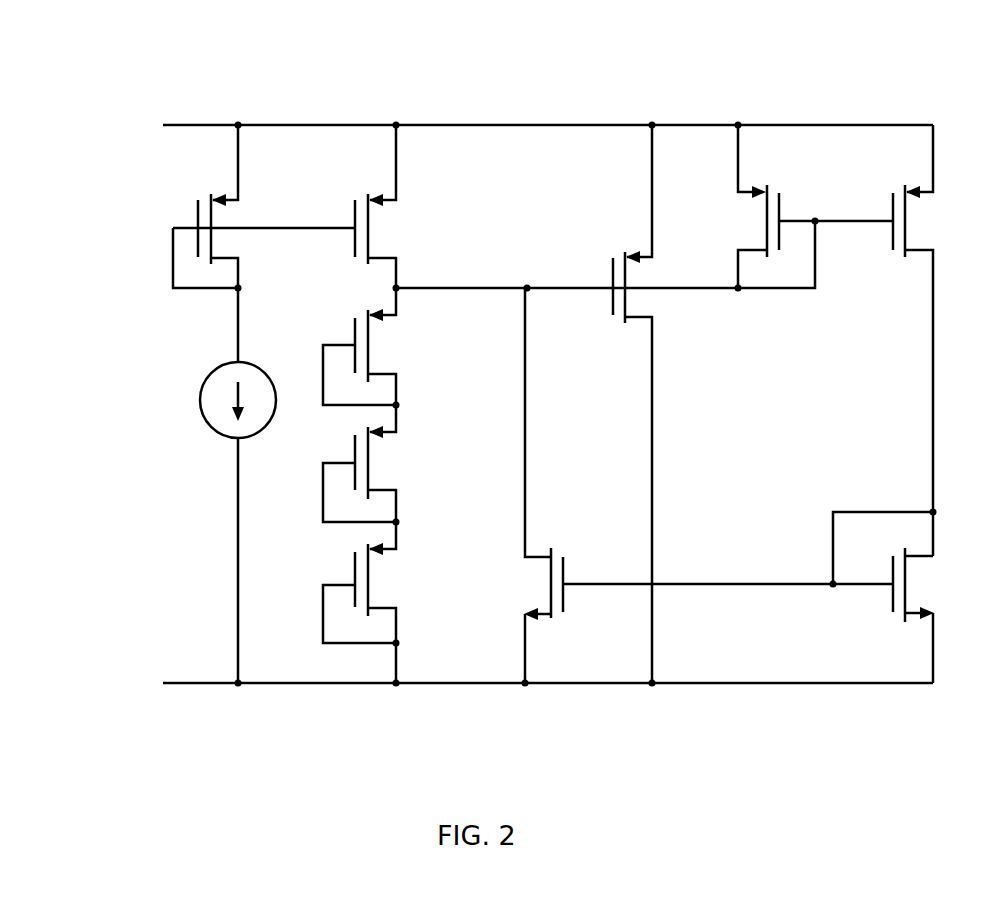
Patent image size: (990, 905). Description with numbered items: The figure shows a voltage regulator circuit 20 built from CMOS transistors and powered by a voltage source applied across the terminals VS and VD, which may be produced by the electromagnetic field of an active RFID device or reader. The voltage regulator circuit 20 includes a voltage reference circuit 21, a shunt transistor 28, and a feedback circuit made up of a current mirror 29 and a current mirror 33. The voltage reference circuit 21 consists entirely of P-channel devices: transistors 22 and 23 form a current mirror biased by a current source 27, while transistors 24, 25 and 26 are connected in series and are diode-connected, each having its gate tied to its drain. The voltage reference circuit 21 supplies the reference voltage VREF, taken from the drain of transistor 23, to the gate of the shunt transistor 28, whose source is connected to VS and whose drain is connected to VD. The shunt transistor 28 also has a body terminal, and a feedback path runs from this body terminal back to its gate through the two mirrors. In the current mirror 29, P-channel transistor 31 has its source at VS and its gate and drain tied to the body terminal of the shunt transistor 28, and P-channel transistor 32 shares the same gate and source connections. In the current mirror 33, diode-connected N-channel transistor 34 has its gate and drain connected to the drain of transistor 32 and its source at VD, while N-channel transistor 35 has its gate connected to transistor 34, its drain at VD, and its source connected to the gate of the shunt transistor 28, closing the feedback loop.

The voltage regulator circuit 20 is at (420, 765).
The voltage reference circuit 21 is at (138, 69).
The P-channel transistor 22 is at (197, 216).
The P-channel transistor 23 is at (353, 216).
The P-channel transistor 24 is at (354, 332).
The P-channel transistor 25 is at (354, 453).
The P-channel transistor 26 is at (354, 568).
The current source 27 is at (224, 366).
The shunt transistor 28 is at (611, 275).
The current mirror 29 is at (749, 90).
The P-channel transistor 31 is at (781, 207).
The P-channel transistor 32 is at (892, 207).
The current mirror 33 is at (832, 726).
The N-channel transistor 34 is at (892, 596).
The N-channel transistor 35 is at (564, 596).